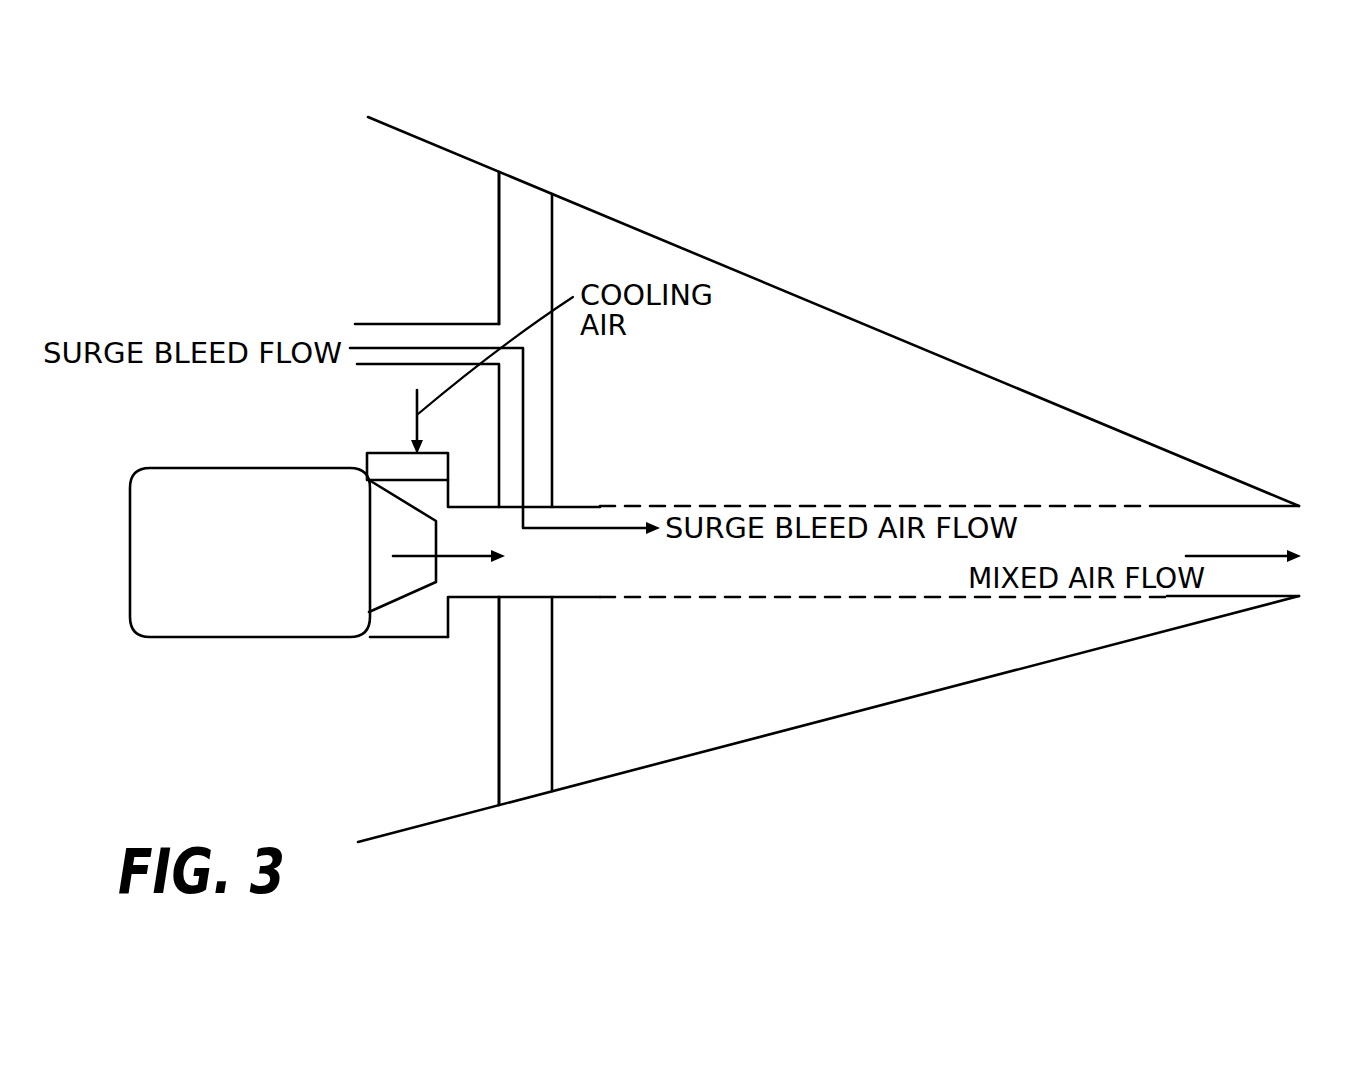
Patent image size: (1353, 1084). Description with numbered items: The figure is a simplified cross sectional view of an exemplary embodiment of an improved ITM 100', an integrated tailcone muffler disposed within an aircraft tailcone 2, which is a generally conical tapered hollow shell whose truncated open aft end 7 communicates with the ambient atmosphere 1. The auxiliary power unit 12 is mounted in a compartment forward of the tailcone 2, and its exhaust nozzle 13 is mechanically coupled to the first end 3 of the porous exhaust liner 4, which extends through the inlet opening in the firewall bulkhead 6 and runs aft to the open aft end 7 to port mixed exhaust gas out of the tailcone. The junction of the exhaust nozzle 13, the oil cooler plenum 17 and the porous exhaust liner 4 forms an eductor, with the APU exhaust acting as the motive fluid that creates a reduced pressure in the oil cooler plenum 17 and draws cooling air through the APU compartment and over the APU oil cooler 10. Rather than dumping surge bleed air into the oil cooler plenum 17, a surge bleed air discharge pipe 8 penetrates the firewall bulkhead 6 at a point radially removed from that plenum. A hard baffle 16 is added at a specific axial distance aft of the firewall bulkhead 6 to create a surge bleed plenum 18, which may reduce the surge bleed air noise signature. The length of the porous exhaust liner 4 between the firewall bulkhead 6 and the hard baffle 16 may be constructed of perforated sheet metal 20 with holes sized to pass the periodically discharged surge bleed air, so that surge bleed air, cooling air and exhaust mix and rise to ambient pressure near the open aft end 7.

The improved ITM 100' is at (828, 496).
The ambient atmosphere 1 is at (1343, 546).
The aircraft tailcone 2 is at (790, 292).
The first end 3 is at (470, 507).
The porous exhaust liner 4 is at (768, 505).
The firewall bulkhead 6 is at (498, 248).
The open aft end 7 is at (1214, 506).
The surge bleed air discharge pipe 8 is at (373, 324).
The APU oil cooler 10 is at (377, 453).
The auxiliary power unit 12 is at (199, 507).
The exhaust nozzle 13 is at (409, 547).
The hard baffle 16 is at (552, 410).
The oil cooler plenum 17 is at (420, 495).
The surge bleed plenum 18 is at (547, 249).
The perforated sheet metal 20 is at (533, 494).